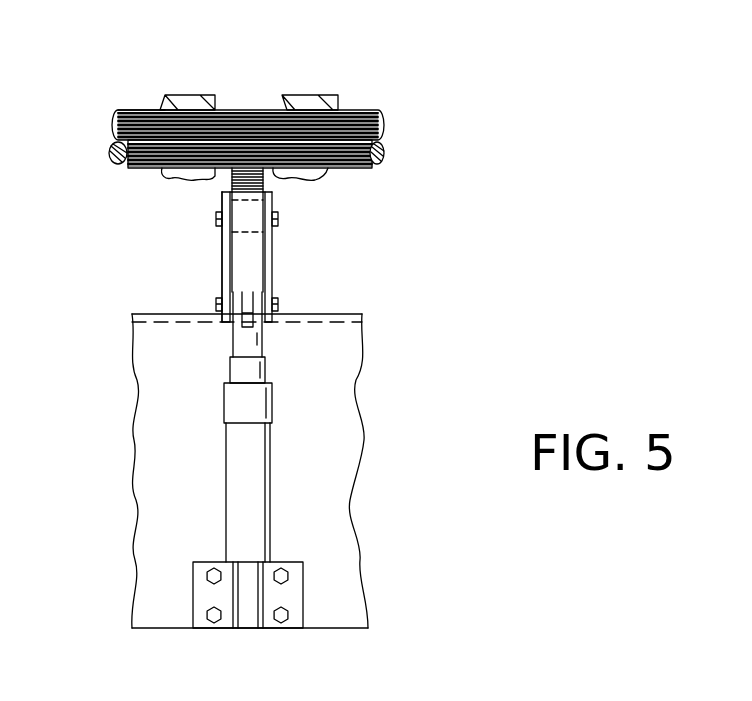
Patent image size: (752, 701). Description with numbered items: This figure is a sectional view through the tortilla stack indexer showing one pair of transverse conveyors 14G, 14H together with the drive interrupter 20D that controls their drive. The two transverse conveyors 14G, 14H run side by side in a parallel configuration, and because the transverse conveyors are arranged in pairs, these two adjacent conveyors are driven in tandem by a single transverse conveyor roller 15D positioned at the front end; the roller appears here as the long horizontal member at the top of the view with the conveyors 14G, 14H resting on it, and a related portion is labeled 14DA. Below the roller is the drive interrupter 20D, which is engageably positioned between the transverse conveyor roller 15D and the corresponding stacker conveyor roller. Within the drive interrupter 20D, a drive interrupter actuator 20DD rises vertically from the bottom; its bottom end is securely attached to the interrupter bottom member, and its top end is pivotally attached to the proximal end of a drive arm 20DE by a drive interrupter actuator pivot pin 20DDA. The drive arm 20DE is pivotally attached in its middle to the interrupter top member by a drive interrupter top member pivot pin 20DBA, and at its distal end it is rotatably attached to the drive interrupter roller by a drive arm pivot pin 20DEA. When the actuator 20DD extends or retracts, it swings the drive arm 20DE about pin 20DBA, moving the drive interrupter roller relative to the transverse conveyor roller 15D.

The roller support arm 14DA is at (150, 108).
The transverse conveyor 14G is at (197, 101).
The transverse conveyor 14H is at (310, 100).
The transverse conveyor roller 15D is at (382, 132).
The drive interrupter 20D is at (138, 287).
The drive interrupter top member pivot pin 20DBA is at (228, 188).
The drive arm 20DE is at (272, 268).
The drive arm pivot pin 20DEA is at (278, 216).
The drive interrupter actuator pivot pin 20DDA is at (278, 306).
The drive interrupter actuator 20DD is at (265, 531).